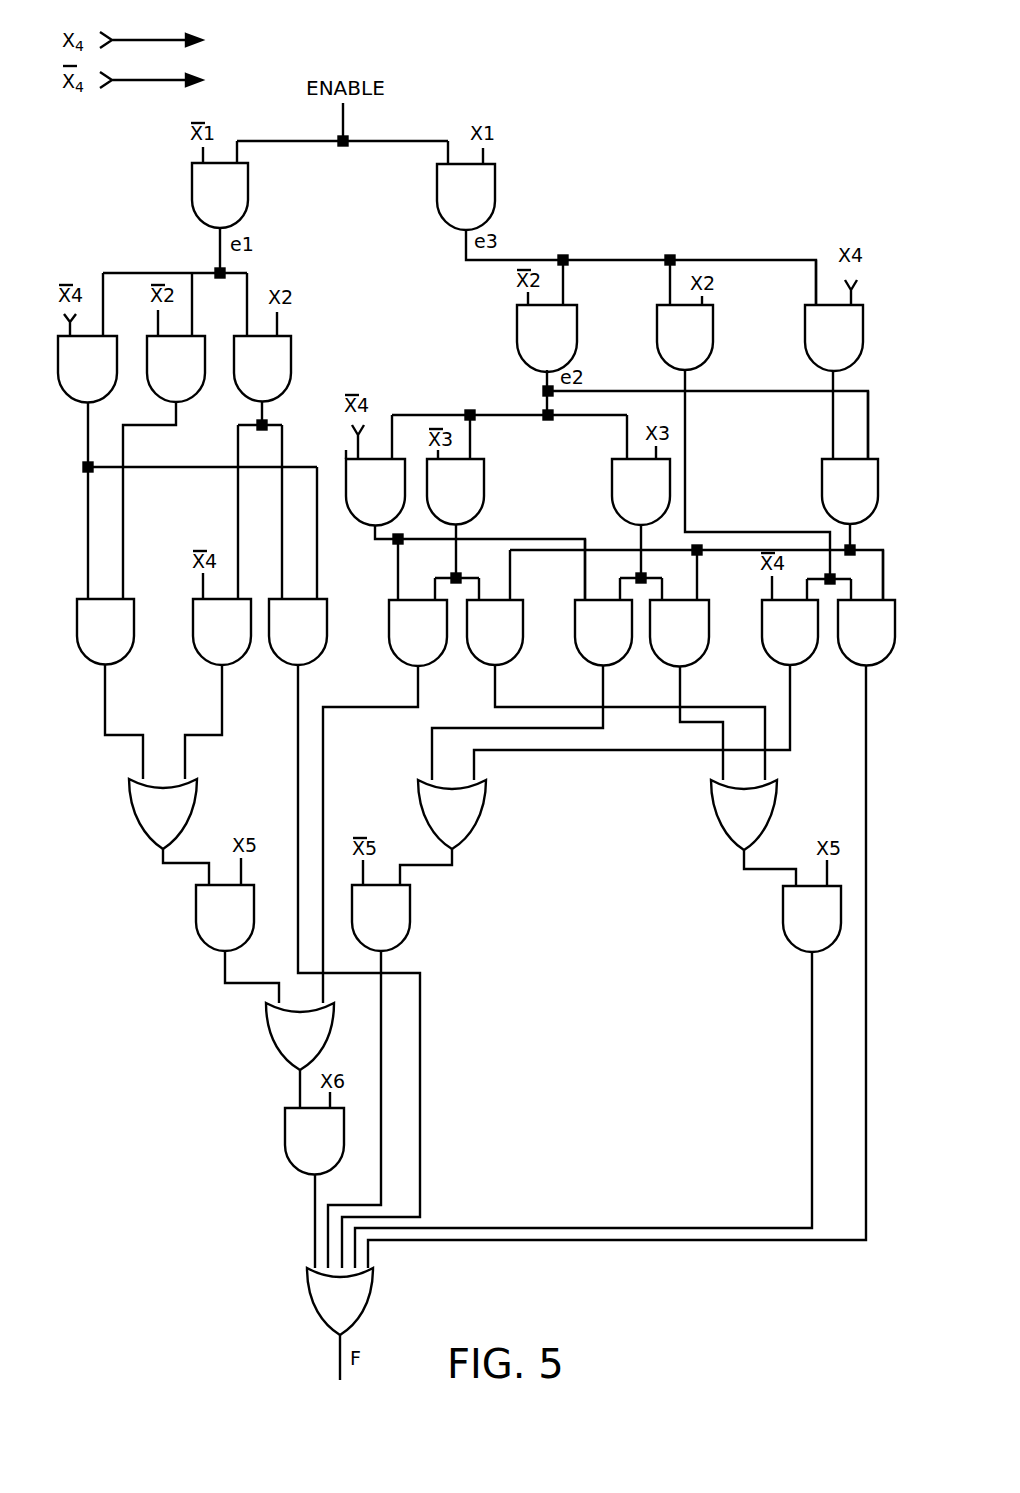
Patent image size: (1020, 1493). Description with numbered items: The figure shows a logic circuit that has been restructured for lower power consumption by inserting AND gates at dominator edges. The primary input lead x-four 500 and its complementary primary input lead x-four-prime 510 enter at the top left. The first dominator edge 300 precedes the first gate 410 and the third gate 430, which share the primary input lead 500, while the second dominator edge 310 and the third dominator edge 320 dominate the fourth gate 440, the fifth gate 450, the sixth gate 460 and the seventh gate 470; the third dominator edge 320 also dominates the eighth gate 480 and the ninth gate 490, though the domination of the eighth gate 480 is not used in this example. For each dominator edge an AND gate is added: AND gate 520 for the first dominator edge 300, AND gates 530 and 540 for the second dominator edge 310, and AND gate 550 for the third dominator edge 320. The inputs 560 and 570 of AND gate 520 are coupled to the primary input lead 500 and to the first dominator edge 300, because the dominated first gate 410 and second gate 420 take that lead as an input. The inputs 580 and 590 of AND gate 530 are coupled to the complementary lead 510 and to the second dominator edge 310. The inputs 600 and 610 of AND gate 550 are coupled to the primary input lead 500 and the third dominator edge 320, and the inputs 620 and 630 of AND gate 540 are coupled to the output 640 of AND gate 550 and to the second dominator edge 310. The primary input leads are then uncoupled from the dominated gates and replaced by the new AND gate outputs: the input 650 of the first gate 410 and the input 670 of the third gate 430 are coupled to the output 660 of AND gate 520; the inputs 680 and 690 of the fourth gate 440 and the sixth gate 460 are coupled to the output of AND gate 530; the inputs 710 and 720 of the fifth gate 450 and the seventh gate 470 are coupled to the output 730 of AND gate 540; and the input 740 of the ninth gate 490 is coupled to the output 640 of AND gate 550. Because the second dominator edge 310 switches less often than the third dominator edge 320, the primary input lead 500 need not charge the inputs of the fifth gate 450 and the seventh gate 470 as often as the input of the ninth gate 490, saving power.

The dominator edge e1 300 is at (215, 268).
The dominator edge e2 310 is at (540, 390).
The dominator edge e3 320 is at (458, 258).
The gate g1 410 is at (94, 658).
The gate g2 420 is at (206, 658).
The gate g3 430 is at (284, 658).
The gate g4 440 is at (400, 658).
The gate g5 450 is at (508, 660).
The gate g6 460 is at (590, 660).
The gate g7 470 is at (696, 660).
The gate g8 480 is at (776, 658).
The gate g9 490 is at (852, 660).
The primary input lead x4 500 is at (158, 38).
The primary input lead x4' 510 is at (160, 82).
The AND gate 520 is at (117, 372).
The AND gate 530 is at (360, 516).
The AND gate 540 is at (822, 506).
The AND gate 550 is at (806, 352).
The input to AND gate 520 560 is at (108, 292).
The input to AND gate 520 570 is at (72, 320).
The input to AND gate 530 580 is at (354, 432).
The input to AND gate 530 590 is at (346, 452).
The input to AND gate 550 600 is at (853, 284).
The input to AND gate 550 610 is at (815, 287).
The input to AND gate 540 620 is at (832, 436).
The input to AND gate 540 630 is at (869, 450).
The output of AND gate 550 640 is at (836, 380).
The input of gate g1 650 is at (86, 584).
The output of AND gate 520 660 is at (86, 446).
The input of gate g3 670 is at (318, 570).
The input of gate g4 680 is at (400, 590).
The input of gate g6 690 is at (583, 590).
The input of gate g5 710 is at (512, 592).
The input of gate g7 720 is at (699, 590).
The output of AND gate 540 730 is at (855, 538).
The input of gate g9 740 is at (882, 590).